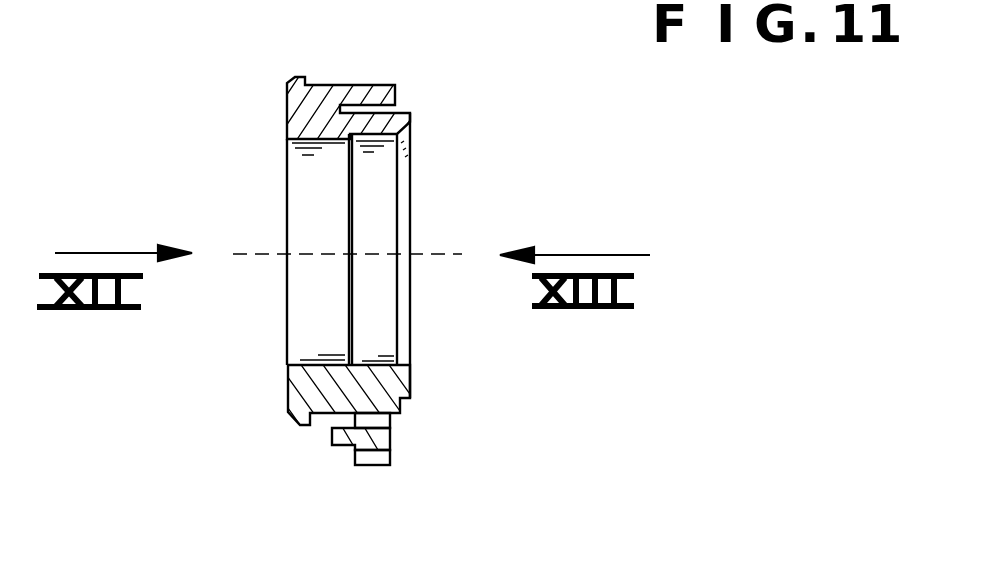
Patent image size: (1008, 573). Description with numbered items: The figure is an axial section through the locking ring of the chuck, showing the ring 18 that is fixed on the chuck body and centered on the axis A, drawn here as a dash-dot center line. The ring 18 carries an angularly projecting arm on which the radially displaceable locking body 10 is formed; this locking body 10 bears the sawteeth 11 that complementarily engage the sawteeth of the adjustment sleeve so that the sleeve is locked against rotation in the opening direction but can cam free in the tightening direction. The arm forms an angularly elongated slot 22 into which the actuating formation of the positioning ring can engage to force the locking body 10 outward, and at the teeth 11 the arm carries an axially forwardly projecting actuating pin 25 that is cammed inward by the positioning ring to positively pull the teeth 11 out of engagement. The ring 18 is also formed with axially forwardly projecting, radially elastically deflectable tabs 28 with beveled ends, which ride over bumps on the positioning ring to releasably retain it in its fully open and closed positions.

The locking body 10 is at (362, 454).
The sawteeth 11 is at (366, 460).
The ring 18 is at (317, 215).
The slot 22 is at (377, 422).
The actuating pin 25 is at (333, 436).
The tabs 28 is at (375, 86).
The axis A is at (428, 250).